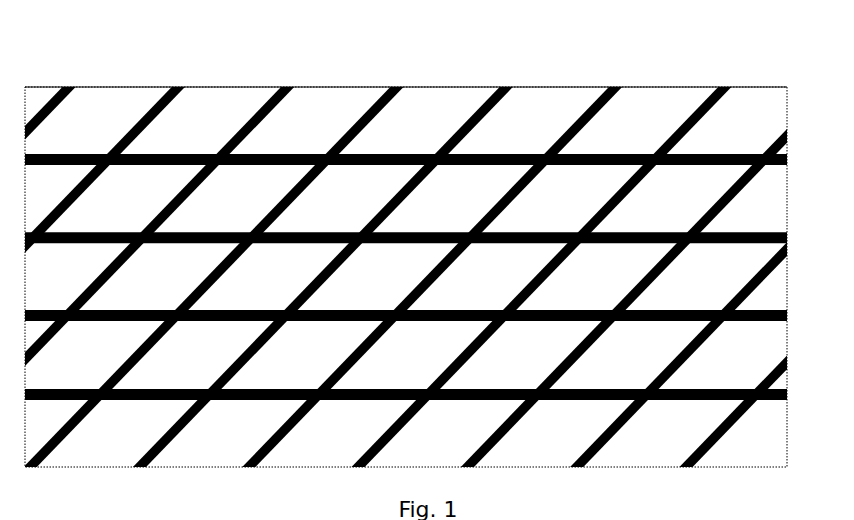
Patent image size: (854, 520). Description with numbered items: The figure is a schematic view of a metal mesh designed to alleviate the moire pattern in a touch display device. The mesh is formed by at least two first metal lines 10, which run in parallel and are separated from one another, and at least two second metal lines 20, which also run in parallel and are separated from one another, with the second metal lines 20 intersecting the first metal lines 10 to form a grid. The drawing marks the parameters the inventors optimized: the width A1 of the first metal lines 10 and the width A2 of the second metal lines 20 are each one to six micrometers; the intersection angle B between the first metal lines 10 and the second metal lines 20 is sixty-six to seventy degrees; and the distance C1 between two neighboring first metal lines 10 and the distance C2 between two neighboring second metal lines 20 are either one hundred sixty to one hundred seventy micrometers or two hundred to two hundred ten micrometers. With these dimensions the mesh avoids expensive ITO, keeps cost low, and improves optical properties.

The first metal lines 10 is at (396, 87).
The second metal lines 20 is at (512, 155).
The width of the first metal lines A1 is at (168, 89).
The width of the second metal lines A2 is at (827, 132).
The distance between two neighboring first metal lines C1 is at (612, 103).
The distance between two neighboring second metal lines C2 is at (567, 233).
The intersection angle between the first metal lines and the second metal lines B is at (283, 185).